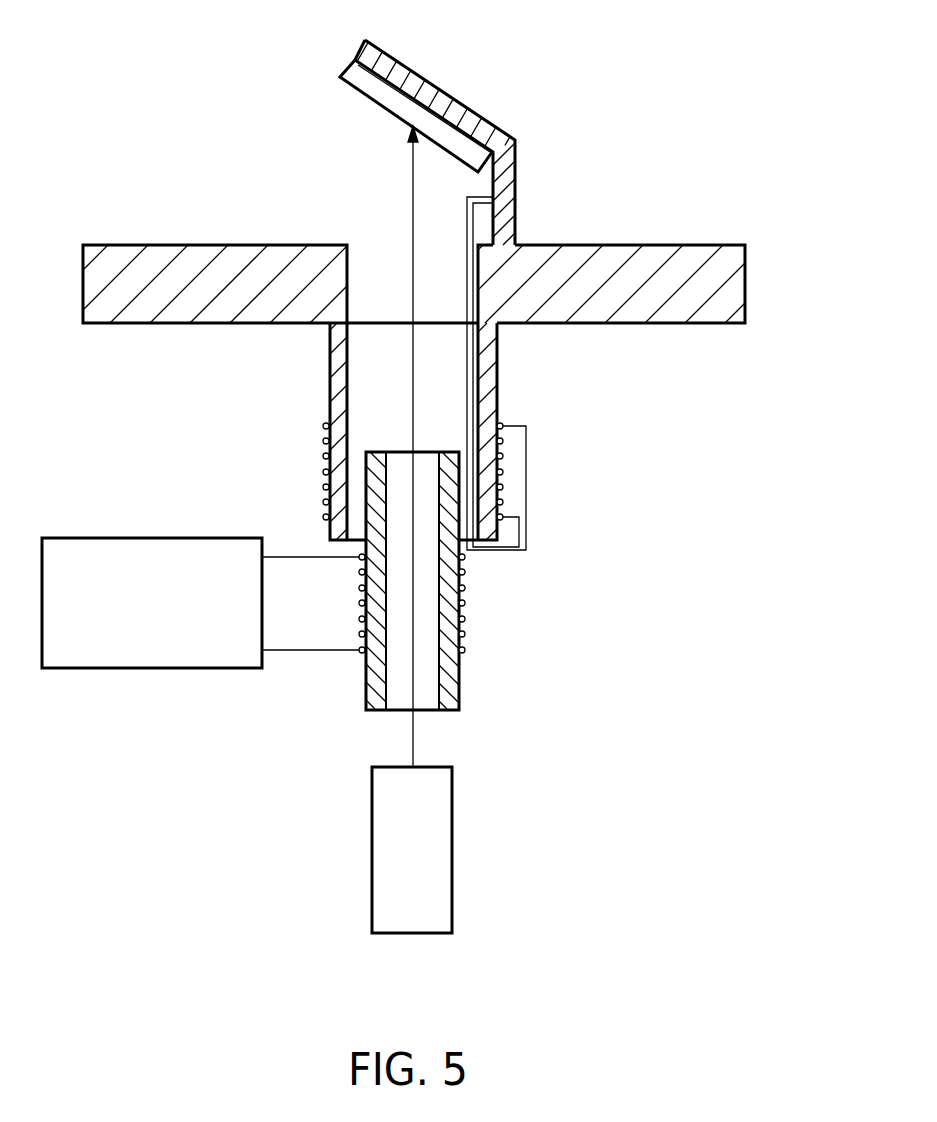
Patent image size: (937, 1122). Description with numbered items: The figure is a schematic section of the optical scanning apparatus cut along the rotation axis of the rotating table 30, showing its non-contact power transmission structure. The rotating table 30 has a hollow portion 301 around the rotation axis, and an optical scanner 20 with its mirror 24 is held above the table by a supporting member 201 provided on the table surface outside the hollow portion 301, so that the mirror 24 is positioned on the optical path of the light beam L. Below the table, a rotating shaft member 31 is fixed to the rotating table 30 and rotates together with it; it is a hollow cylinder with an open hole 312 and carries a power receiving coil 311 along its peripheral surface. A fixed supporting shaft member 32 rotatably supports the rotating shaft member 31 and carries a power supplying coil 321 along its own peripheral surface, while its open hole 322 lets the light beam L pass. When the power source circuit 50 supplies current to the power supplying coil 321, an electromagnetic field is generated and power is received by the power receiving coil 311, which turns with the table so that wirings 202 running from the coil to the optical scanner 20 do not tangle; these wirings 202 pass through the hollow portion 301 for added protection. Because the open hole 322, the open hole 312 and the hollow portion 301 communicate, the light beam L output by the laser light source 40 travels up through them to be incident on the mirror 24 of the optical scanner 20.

The optical scanner 20 is at (362, 86).
The mirror 24 is at (341, 78).
The supporting member 201 is at (515, 198).
The wirings 202 is at (470, 198).
The rotating table 30 is at (678, 258).
The hollow portion 301 is at (386, 260).
The rotating shaft member 31 is at (486, 364).
The open hole 312 is at (372, 362).
The power receiving coil 311 is at (322, 420).
The supporting shaft member 32 is at (455, 681).
The power supplying coil 321 is at (346, 562).
The open hole 322 is at (427, 676).
The laser light source 40 is at (452, 868).
The power source circuit 50 is at (137, 670).
The light beam L is at (413, 738).